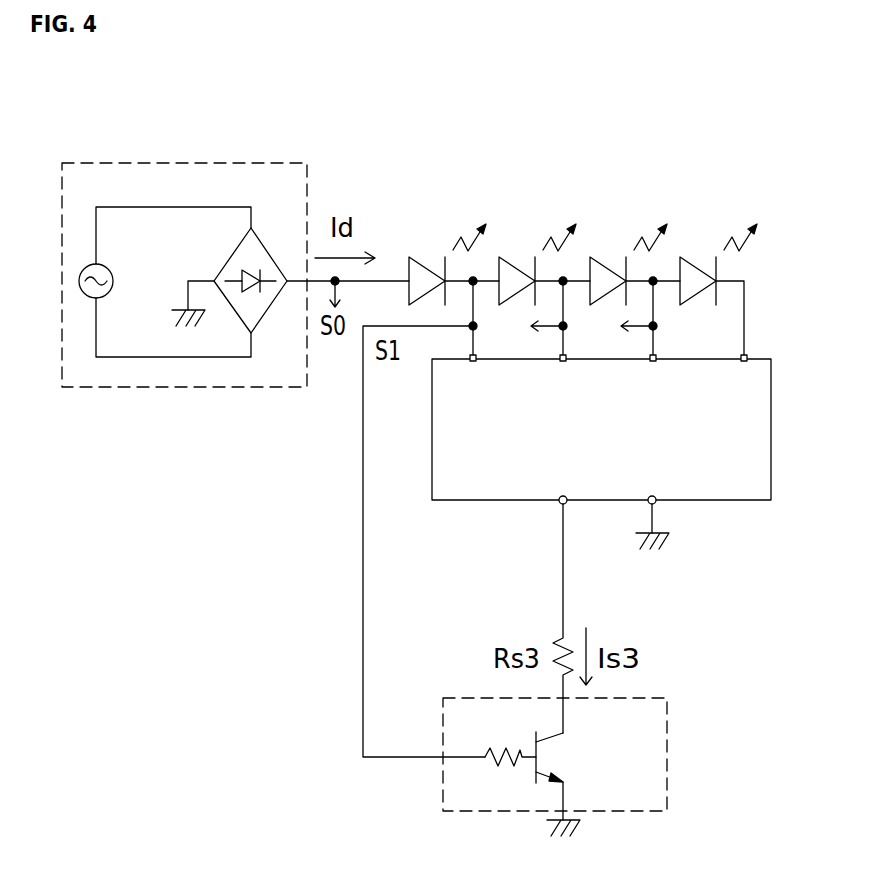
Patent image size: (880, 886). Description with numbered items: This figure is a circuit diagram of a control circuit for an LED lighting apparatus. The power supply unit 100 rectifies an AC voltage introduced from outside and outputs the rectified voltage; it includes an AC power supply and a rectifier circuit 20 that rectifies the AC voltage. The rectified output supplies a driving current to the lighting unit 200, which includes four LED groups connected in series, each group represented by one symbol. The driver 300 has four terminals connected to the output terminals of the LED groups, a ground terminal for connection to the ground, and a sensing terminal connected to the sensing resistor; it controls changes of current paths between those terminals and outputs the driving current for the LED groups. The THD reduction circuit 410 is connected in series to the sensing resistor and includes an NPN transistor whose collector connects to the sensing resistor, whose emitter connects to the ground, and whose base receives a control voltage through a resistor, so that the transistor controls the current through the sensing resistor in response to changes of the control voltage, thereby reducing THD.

The power supply unit 100 is at (182, 163).
The rectifier 20 is at (257, 237).
The lighting unit 200 is at (742, 193).
The driver 300 is at (537, 501).
The THD reduction circuit 410 is at (668, 740).